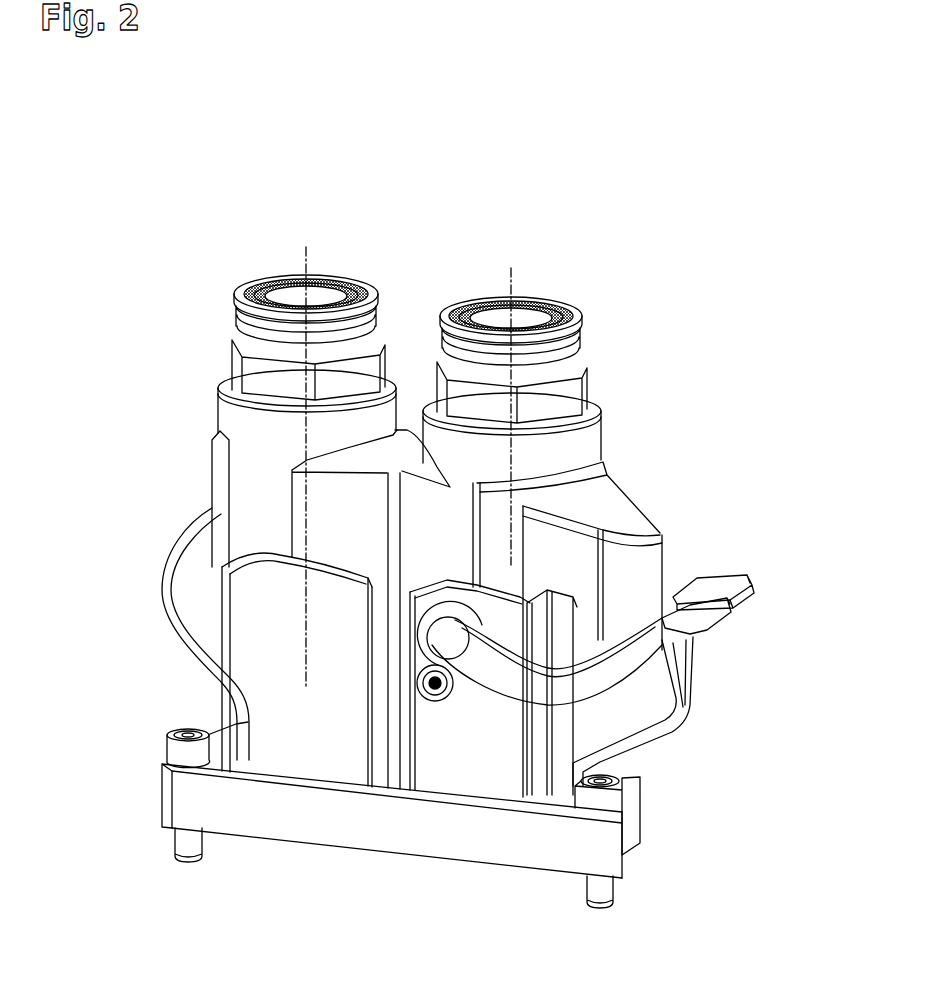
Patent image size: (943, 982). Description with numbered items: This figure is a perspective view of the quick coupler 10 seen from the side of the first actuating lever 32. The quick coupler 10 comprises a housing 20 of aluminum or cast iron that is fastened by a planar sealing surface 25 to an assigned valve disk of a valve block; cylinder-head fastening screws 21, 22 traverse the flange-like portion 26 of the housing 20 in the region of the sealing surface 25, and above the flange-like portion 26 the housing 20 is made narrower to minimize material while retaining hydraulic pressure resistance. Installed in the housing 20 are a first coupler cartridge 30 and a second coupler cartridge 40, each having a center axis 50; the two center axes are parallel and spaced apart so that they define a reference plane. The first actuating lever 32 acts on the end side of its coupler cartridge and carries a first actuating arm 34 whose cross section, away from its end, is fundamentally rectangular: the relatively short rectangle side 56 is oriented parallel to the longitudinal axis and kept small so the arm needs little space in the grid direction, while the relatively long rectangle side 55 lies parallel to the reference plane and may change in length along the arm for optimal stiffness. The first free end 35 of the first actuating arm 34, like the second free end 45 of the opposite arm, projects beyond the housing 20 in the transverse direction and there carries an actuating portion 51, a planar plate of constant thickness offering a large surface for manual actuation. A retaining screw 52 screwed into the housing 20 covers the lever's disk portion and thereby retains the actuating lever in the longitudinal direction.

The quick coupler 10 is at (686, 183).
The housing 20 is at (401, 832).
The fastening screw 21 is at (605, 890).
The fastening screw 22 is at (183, 845).
The sealing surface 25 is at (260, 840).
The flange-like portion 26 is at (352, 830).
The first coupler cartridge 30 is at (523, 323).
The first actuating lever 32 is at (623, 724).
The first actuating arm 34 is at (587, 687).
The first free end 35 is at (723, 623).
The second coupler cartridge 40 is at (297, 295).
The second free end 45 is at (713, 582).
The center axis 50 is at (307, 250).
The actuating portion 51 is at (746, 586).
The retaining screw 52 is at (437, 700).
The long rectangle side 55 is at (510, 680).
The short rectangle side 56 is at (480, 657).